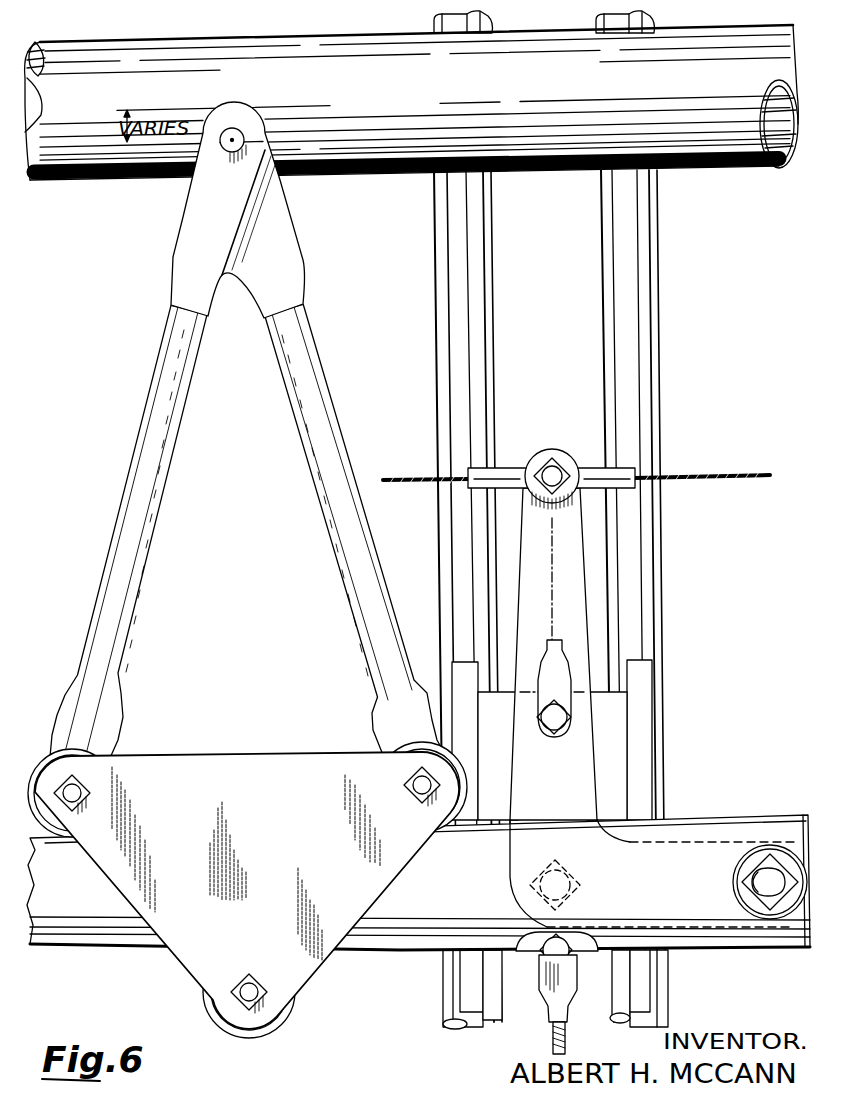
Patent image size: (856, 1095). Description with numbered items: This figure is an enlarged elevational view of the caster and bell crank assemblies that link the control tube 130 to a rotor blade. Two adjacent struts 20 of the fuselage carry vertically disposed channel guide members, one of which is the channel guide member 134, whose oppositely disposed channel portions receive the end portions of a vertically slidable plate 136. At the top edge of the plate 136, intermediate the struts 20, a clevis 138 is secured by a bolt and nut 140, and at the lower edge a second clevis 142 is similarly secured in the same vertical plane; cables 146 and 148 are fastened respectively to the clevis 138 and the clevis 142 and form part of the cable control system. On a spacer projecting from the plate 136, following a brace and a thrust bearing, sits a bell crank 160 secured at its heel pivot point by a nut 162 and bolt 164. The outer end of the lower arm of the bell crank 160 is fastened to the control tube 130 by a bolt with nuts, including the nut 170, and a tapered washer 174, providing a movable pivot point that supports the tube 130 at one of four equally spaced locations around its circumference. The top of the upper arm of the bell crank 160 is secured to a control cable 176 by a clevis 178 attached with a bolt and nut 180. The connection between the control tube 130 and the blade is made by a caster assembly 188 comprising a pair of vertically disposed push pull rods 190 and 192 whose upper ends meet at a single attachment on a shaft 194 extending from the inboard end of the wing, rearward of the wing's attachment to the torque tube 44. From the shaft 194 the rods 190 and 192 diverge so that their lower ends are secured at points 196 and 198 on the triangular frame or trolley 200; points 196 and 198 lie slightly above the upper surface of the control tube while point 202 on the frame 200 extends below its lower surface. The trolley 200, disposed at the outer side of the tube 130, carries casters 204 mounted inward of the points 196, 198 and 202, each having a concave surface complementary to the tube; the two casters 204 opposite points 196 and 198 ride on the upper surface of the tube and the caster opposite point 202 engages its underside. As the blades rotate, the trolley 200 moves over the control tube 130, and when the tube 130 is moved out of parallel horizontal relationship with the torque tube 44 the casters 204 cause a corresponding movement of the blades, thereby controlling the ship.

The strut 20 is at (434, 338).
The torque tube 44 is at (70, 181).
The control tube 130 is at (382, 950).
The channel guide member 134 is at (648, 718).
The vertically slidable plate 136 is at (622, 740).
The clevis 138 is at (562, 648).
The bolt and nut 140 is at (557, 740).
The clevis 142 is at (548, 978).
The cable 146 is at (560, 580).
The cable 148 is at (567, 1042).
The bell crank 160 is at (592, 788).
The nut 162 is at (582, 878).
The bolt 164 is at (580, 893).
The nut 170 is at (763, 907).
The tapered washer 174 is at (782, 913).
The control cable 176 is at (395, 477).
The clevis 178 is at (490, 468).
The bolt and nut 180 is at (552, 449).
The caster assembly 188 is at (133, 383).
The push pull rod 190 is at (172, 448).
The push pull rod 192 is at (314, 478).
The shaft 194 is at (246, 112).
The attachment point 196 is at (47, 755).
The attachment point 198 is at (432, 745).
The triangular frame or trolley 200 is at (255, 754).
The point on frame 202 is at (258, 1020).
The caster 204 is at (55, 834).